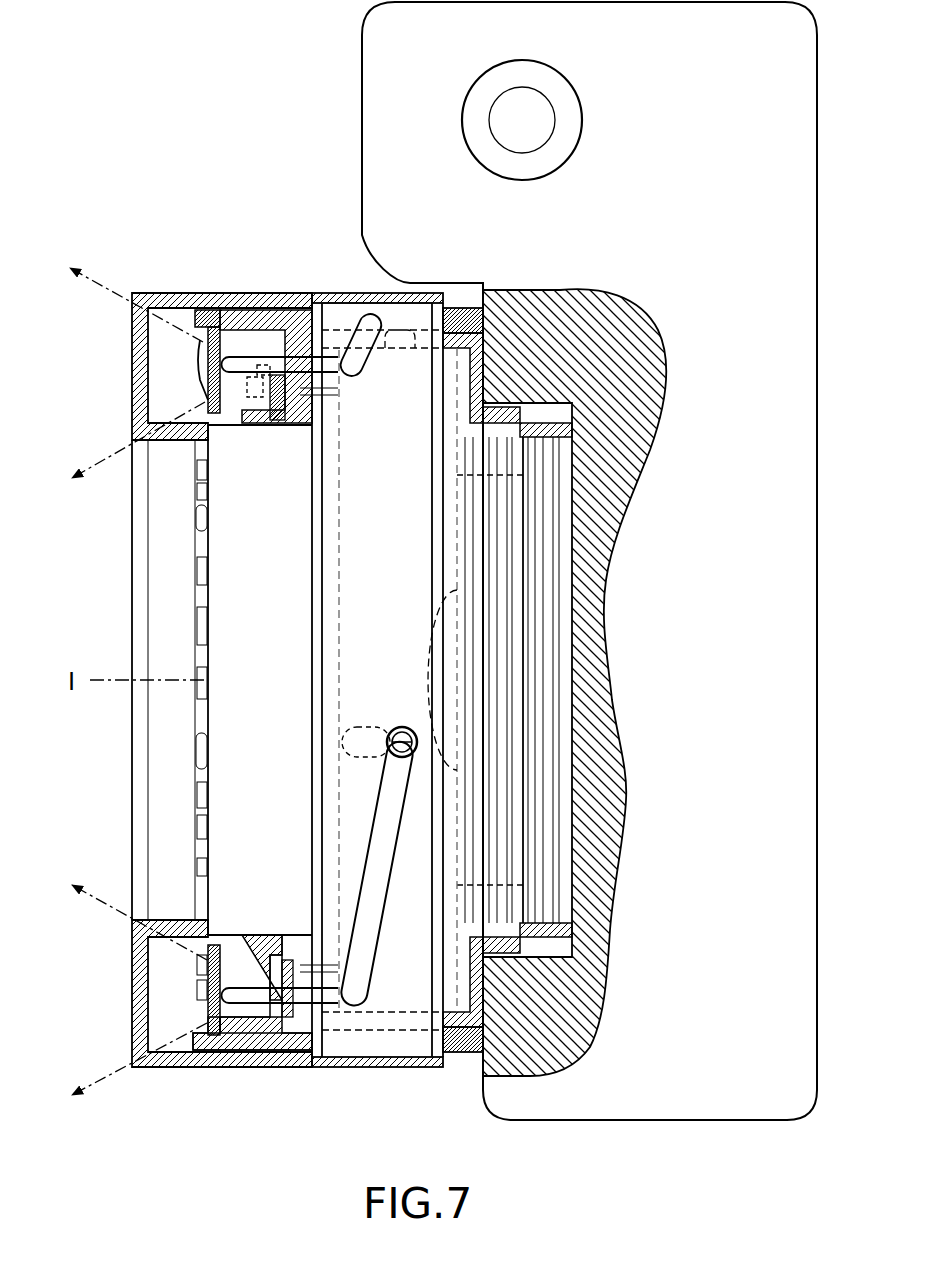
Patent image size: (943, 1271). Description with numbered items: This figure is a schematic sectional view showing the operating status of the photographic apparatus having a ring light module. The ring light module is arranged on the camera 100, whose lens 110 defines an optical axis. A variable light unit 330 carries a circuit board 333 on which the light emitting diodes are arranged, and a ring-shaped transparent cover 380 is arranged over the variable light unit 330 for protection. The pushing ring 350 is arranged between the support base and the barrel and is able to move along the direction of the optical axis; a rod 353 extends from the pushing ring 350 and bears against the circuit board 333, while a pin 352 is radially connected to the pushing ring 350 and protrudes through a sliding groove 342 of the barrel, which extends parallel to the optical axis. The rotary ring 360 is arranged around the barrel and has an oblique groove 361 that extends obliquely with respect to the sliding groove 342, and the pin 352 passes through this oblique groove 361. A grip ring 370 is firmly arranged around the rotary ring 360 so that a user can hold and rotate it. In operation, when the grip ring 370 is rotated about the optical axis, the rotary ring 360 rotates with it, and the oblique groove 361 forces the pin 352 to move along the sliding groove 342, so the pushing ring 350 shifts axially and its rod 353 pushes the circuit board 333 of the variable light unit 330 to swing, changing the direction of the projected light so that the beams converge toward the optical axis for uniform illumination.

The camera 100 is at (407, 50).
The lens 110 is at (463, 805).
The variable light unit 330 is at (205, 412).
The circuit board 333 is at (200, 352).
The sliding groove 342 is at (370, 727).
The pushing ring 350 is at (375, 523).
The pin 352 is at (387, 742).
The rod 353 is at (233, 320).
The rotary ring 360 is at (332, 322).
The oblique groove 361 is at (356, 308).
The grip ring 370 is at (410, 283).
The transparent cover 380 is at (177, 300).